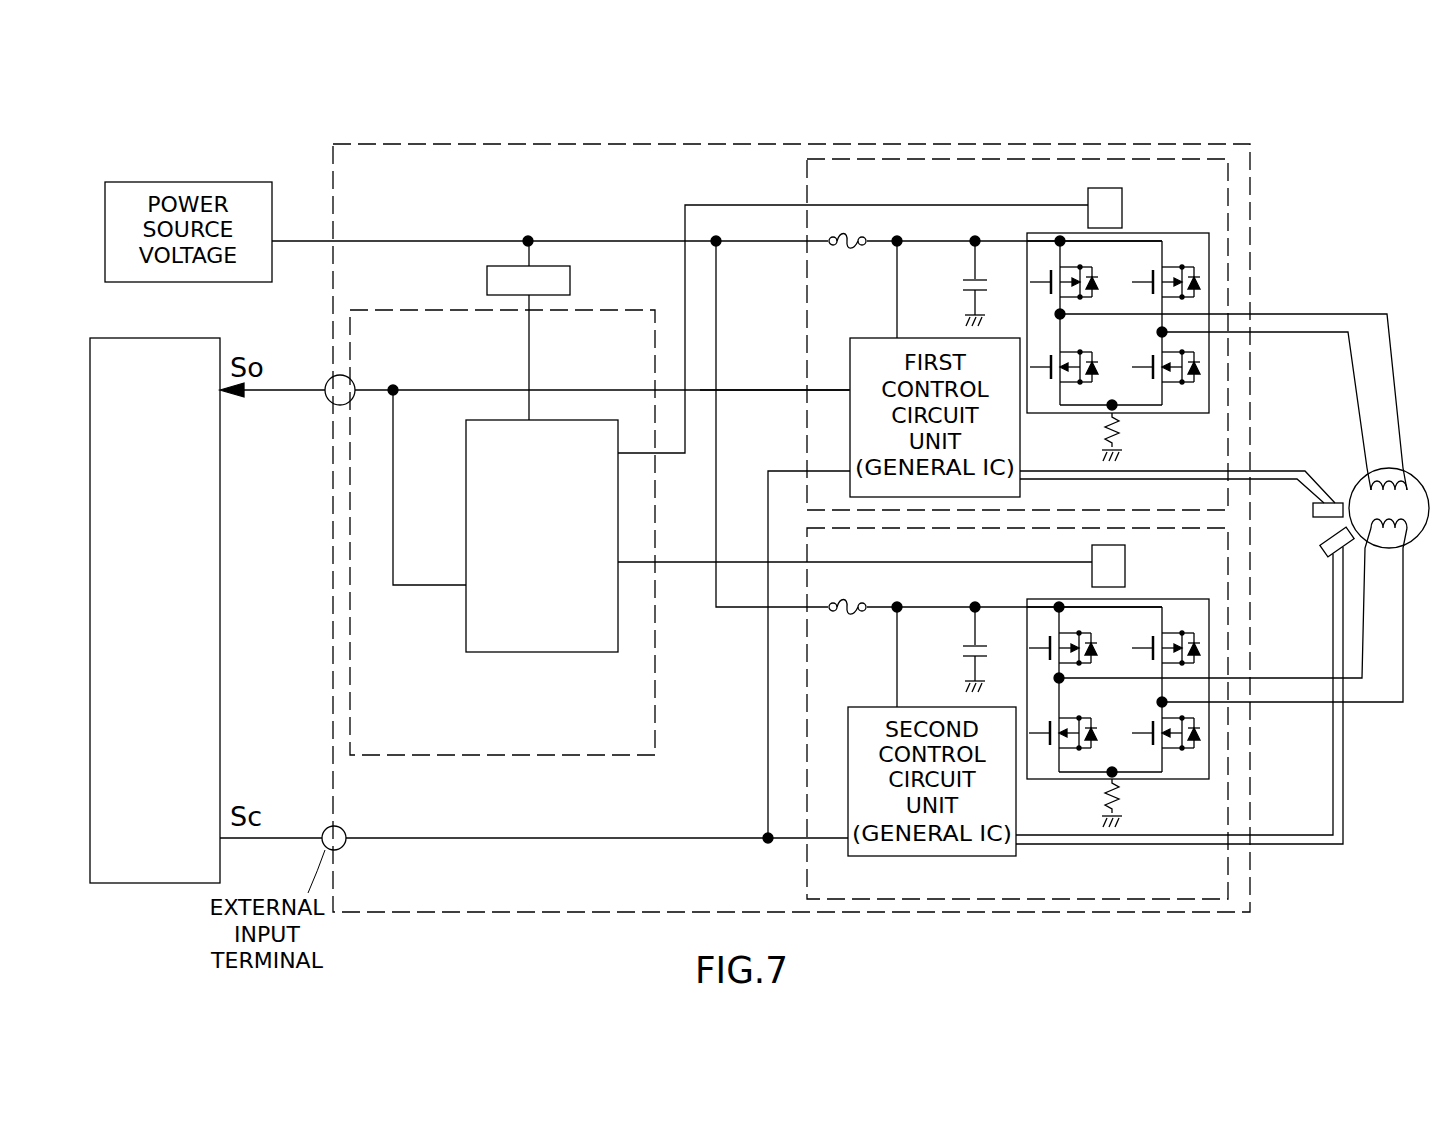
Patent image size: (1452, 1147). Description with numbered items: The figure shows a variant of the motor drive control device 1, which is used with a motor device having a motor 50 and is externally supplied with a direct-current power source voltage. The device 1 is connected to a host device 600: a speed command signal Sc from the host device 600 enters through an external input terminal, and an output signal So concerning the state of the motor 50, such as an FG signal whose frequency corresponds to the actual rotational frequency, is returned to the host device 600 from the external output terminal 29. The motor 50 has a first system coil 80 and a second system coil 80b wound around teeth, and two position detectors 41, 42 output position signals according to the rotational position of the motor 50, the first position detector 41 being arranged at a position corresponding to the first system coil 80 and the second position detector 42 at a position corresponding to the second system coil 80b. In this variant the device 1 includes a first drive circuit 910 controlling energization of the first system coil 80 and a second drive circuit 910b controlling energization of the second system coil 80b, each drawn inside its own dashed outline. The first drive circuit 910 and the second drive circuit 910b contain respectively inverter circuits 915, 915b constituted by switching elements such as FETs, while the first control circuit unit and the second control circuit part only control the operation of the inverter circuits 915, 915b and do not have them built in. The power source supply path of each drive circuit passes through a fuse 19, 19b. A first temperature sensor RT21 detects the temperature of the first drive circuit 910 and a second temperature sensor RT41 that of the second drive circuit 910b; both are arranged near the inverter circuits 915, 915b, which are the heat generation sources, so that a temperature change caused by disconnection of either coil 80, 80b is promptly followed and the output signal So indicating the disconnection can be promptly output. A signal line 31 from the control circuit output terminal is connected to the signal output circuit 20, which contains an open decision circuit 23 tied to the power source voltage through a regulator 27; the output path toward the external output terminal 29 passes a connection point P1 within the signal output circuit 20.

The motor drive control device 1 is at (875, 144).
The first drive circuit 910 is at (1127, 160).
The second drive circuit 910b is at (1145, 900).
The inverter circuit 915 is at (1210, 268).
The inverter circuit 915b is at (1210, 760).
The first temperature sensor RT21 is at (1122, 212).
The second temperature sensor RT41 is at (1125, 573).
The regulator 27 is at (570, 283).
The external output terminal 29 is at (328, 378).
The connection point P1 is at (396, 385).
The open decision circuit 23 is at (463, 625).
The signal output circuit 20 is at (497, 757).
The signal line 31 is at (752, 385).
The fuse 19 is at (851, 250).
The fuse 19b is at (848, 615).
The host device 600 is at (165, 337).
The motor 50 is at (1396, 458).
The first system coil 80 is at (1375, 488).
The second system coil 80b is at (1372, 526).
The first position detector 41 is at (1315, 515).
The second position detector 42 is at (1322, 555).